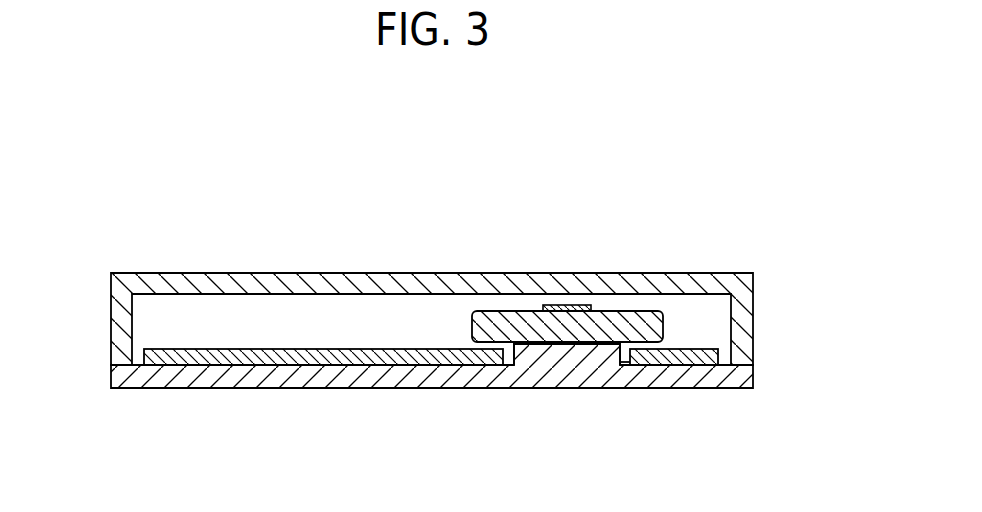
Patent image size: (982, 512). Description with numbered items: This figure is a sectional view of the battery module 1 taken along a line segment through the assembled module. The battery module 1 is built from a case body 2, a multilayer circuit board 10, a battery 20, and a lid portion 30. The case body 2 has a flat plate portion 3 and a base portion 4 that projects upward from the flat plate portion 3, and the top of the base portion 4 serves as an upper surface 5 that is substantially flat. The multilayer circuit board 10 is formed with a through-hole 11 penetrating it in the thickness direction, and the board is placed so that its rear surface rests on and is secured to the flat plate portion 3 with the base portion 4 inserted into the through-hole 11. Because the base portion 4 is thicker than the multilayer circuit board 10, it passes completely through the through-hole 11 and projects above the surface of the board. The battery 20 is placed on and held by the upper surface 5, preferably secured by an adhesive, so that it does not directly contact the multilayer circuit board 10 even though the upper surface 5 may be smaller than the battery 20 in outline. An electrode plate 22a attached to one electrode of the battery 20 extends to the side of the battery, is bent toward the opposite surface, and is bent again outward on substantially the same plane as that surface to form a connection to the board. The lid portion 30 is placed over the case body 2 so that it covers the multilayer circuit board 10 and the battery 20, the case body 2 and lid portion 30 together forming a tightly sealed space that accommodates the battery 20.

The battery module 1 is at (146, 196).
The case body 2 is at (735, 377).
The flat plate portion 3 is at (349, 378).
The base portion 4 is at (550, 345).
The upper surface 5 is at (526, 337).
The multilayer circuit board 10 is at (152, 356).
The through-hole 11 is at (625, 367).
The battery 20 is at (634, 328).
The electrode plate 22a is at (565, 305).
The lid portion 30 is at (264, 284).